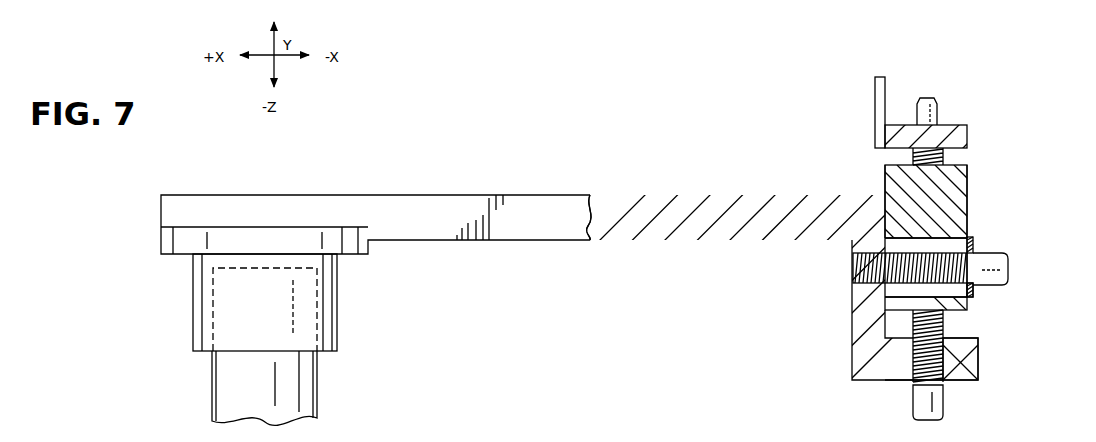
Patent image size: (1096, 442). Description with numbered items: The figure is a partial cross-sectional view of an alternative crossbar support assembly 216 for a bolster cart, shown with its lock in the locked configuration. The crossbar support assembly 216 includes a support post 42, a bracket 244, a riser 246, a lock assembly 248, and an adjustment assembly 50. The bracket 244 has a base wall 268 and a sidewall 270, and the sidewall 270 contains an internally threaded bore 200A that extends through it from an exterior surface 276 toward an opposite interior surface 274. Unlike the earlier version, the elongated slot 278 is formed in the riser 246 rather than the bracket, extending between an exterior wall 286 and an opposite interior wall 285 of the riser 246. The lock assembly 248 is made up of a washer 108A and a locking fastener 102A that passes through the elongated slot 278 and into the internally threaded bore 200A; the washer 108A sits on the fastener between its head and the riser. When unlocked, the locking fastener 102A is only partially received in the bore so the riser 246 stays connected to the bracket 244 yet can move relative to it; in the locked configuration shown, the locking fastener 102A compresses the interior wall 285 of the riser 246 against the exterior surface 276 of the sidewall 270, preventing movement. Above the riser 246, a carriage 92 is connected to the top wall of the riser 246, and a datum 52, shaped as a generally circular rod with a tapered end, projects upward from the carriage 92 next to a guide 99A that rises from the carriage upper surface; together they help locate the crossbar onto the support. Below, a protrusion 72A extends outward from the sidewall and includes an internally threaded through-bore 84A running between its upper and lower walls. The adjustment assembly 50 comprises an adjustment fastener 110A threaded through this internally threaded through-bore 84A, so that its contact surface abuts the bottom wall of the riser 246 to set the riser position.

The support post 42 is at (212, 378).
The crossbar support assembly 216 is at (190, 192).
The bracket 244 is at (578, 192).
The base wall 268 is at (591, 196).
The interior surface 274 is at (852, 337).
The exterior surface 276 is at (898, 326).
The protrusion 72A is at (978, 348).
The guide 99A is at (875, 95).
The carriage 92 is at (966, 137).
The datum 52 is at (941, 112).
The riser 246 is at (969, 178).
The exterior wall 286 is at (967, 196).
The interior wall 285 is at (885, 185).
The washer 108A is at (920, 235).
The sidewall 270 is at (853, 247).
The internally threaded bore 200A is at (880, 283).
The locking fastener 102A is at (1035, 232).
The lock assembly 248 is at (1014, 271).
The elongated slot 278 is at (975, 290).
The internally threaded through-bore 84A is at (945, 366).
The adjustment fastener 110A is at (908, 384).
The adjustment assembly 50 is at (951, 411).